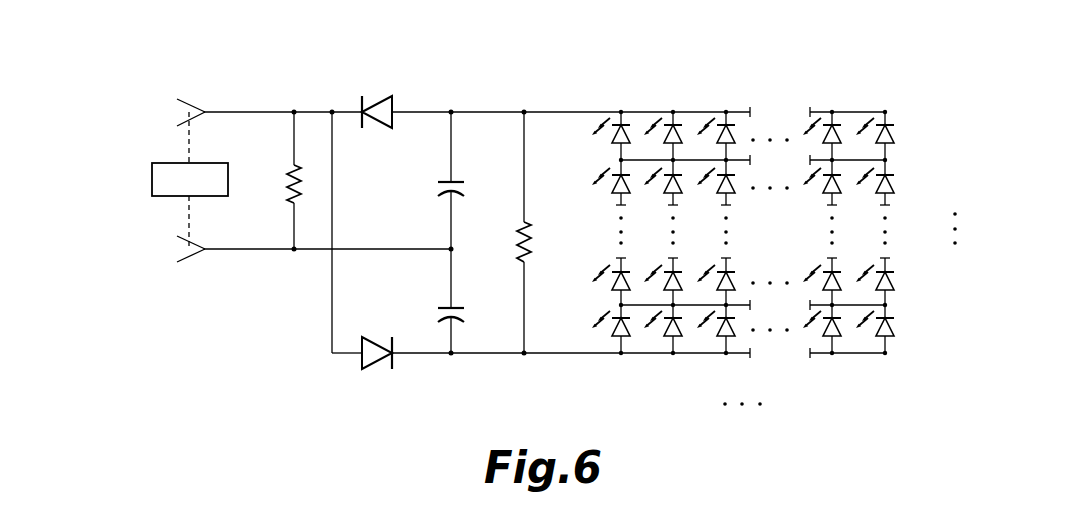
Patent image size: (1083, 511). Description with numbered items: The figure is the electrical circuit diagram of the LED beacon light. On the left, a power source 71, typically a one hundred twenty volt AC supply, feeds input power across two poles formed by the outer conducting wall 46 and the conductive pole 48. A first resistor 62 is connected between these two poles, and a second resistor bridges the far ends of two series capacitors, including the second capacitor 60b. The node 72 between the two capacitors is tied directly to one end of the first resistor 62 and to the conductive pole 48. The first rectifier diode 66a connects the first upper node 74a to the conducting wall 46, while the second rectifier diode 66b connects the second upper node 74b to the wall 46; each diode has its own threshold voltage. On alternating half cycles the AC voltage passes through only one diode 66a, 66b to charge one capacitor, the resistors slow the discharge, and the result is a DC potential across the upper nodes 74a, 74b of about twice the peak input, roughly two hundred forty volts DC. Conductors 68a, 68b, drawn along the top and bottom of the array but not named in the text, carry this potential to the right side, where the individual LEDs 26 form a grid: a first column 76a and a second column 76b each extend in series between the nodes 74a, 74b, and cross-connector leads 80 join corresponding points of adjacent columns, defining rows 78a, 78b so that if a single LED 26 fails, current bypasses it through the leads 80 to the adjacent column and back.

The outer conducting wall 46 is at (193, 103).
The conductive pole 48 is at (192, 258).
The power source 71 is at (172, 163).
The first resistor 62 is at (281, 207).
The first rectifier diode 66a is at (363, 78).
The second rectifier diode 66b is at (348, 366).
The first upper node 74a is at (451, 112).
The second upper node 74b is at (453, 355).
The node 72 is at (453, 248).
The second capacitor 60b is at (479, 304).
The upper supply conductor 68a is at (556, 112).
The lower supply conductor 68b is at (552, 355).
The cross-connector leads 80 is at (688, 160).
The LED 26 is at (902, 113).
The first row of LEDs 78a is at (889, 110).
The second row of LEDs 78b is at (919, 162).
The first column of LEDs 76a is at (595, 368).
The second column of LEDs 76b is at (813, 240).